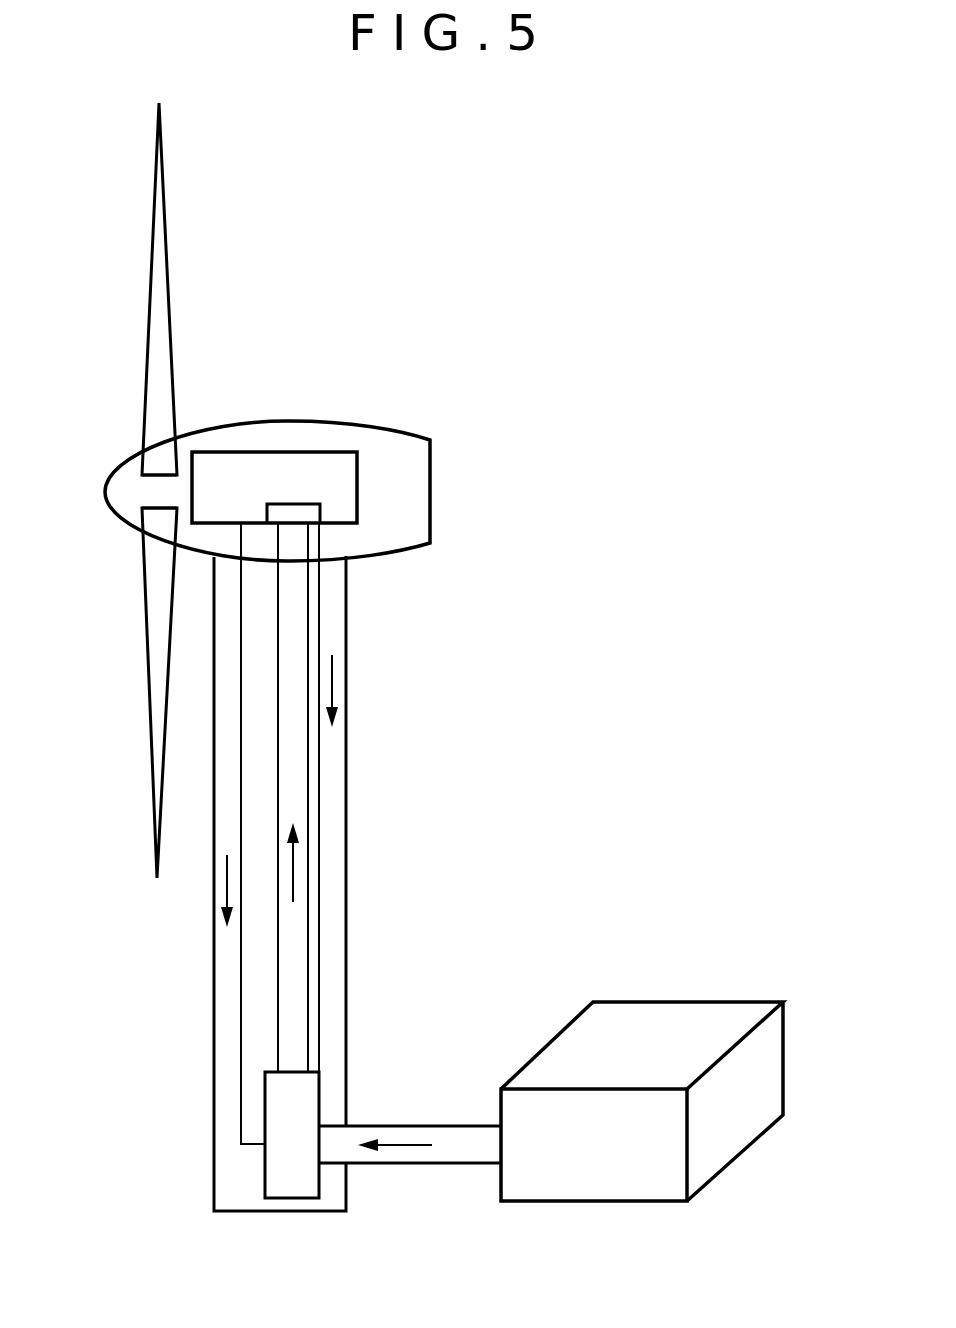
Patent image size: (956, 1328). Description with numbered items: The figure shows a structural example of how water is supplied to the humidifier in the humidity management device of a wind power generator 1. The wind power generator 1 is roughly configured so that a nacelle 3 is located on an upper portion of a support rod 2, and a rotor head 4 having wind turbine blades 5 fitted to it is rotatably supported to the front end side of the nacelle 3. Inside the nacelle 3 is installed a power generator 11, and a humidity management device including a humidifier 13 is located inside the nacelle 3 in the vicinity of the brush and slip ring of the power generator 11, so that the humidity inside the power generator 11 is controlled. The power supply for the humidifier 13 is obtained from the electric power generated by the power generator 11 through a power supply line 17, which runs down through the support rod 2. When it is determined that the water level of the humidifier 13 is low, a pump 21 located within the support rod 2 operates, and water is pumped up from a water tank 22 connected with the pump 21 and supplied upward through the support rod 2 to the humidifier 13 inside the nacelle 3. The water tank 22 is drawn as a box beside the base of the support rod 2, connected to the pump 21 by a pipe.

The wind power generator 1 is at (483, 671).
The support rod 2 is at (223, 1018).
The nacelle 3 is at (322, 438).
The rotor head 4 is at (105, 492).
The wind turbine blades 5 is at (152, 250).
The power generator 11 is at (252, 450).
The humidifier 13 is at (322, 510).
The power supply line 17 is at (320, 930).
The pump 21 is at (317, 1089).
The water tank 22 is at (745, 1122).